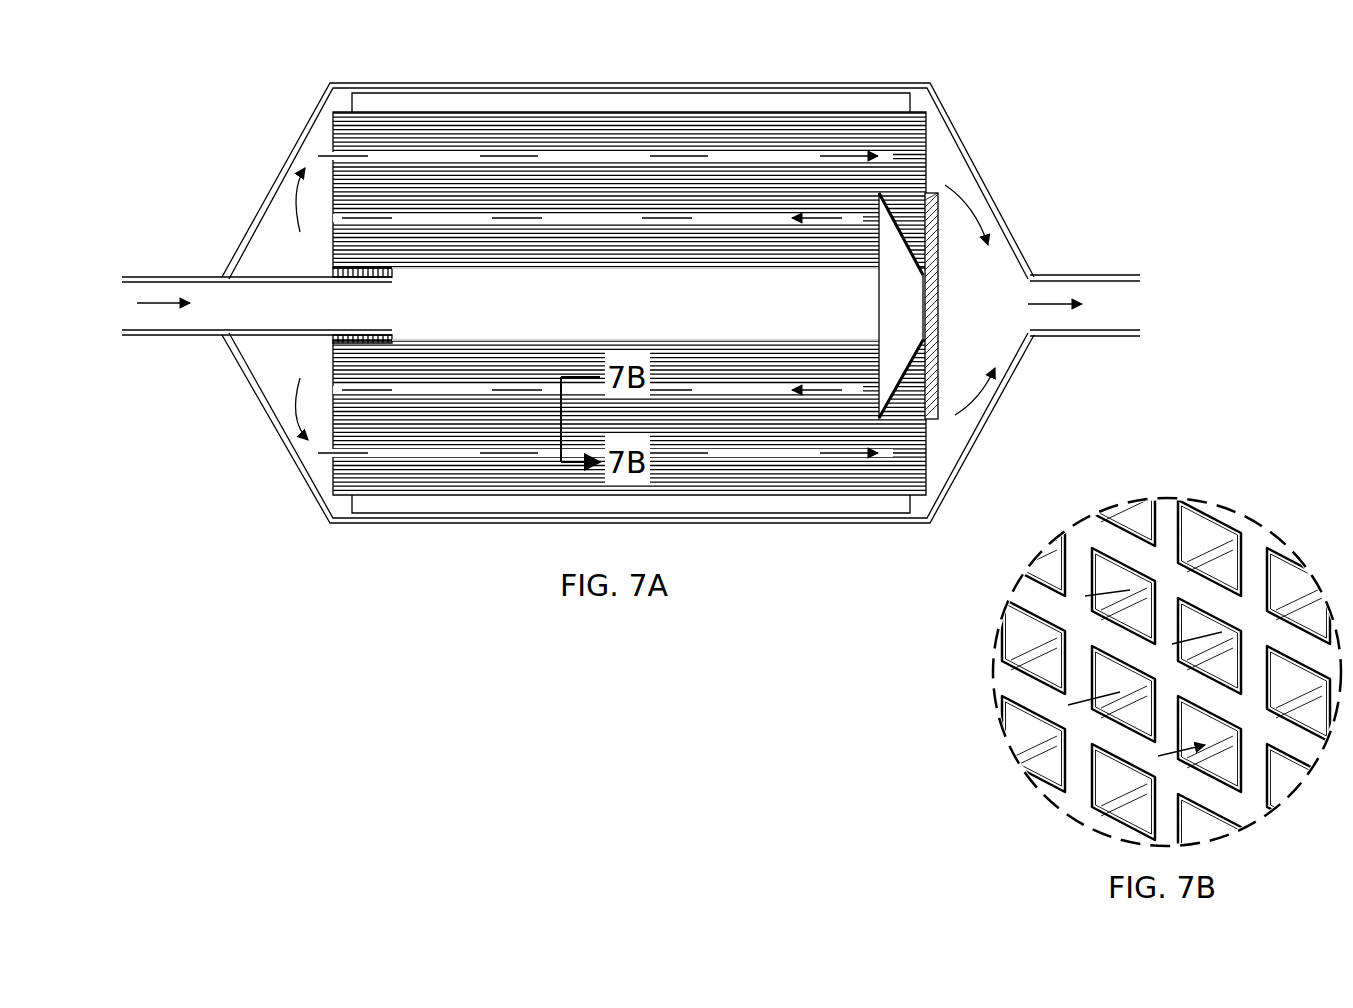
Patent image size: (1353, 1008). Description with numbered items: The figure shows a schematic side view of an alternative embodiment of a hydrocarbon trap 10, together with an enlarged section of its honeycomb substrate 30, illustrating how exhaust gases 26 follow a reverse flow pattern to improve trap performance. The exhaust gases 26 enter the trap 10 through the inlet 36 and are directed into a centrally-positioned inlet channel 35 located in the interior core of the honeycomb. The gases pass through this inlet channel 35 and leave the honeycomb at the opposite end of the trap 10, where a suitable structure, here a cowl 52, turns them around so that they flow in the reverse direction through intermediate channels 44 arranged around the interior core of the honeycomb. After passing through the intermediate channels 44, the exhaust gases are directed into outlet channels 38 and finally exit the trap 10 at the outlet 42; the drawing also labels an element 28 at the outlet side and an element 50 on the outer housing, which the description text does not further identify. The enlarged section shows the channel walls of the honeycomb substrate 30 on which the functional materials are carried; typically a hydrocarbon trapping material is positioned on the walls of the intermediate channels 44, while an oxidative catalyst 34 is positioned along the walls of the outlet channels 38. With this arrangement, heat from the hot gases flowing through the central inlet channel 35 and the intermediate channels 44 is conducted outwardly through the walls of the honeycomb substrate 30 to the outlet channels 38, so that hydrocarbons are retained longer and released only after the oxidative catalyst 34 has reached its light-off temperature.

In FIG. 7A, the trap 10 is at (223, 167).
In FIG. 7A, the exhaust gases 26 is at (170, 303).
In FIG. 7A, the outlet pipe 28 is at (1062, 305).
In FIG. 7B, the honeycomb substrate 30 is at (1143, 670).
In FIG. 7B, the oxidative catalyst 34 is at (1010, 670).
In FIG. 7A, the inlet channel 35 is at (494, 320).
In FIG. 7A, the inlet 36 is at (140, 293).
In FIG. 7A, the outlet channels 38 is at (333, 148).
In FIG. 7B, the outlet channels 38 is at (1232, 778).
In FIG. 7A, the outlet 42 is at (1090, 277).
In FIG. 7A, the intermediate channels 44 is at (333, 262).
In FIG. 7B, the intermediate channels 44 is at (1137, 585).
In FIG. 7A, the housing 50 is at (345, 83).
In FIG. 7A, the cowl 52 is at (892, 222).